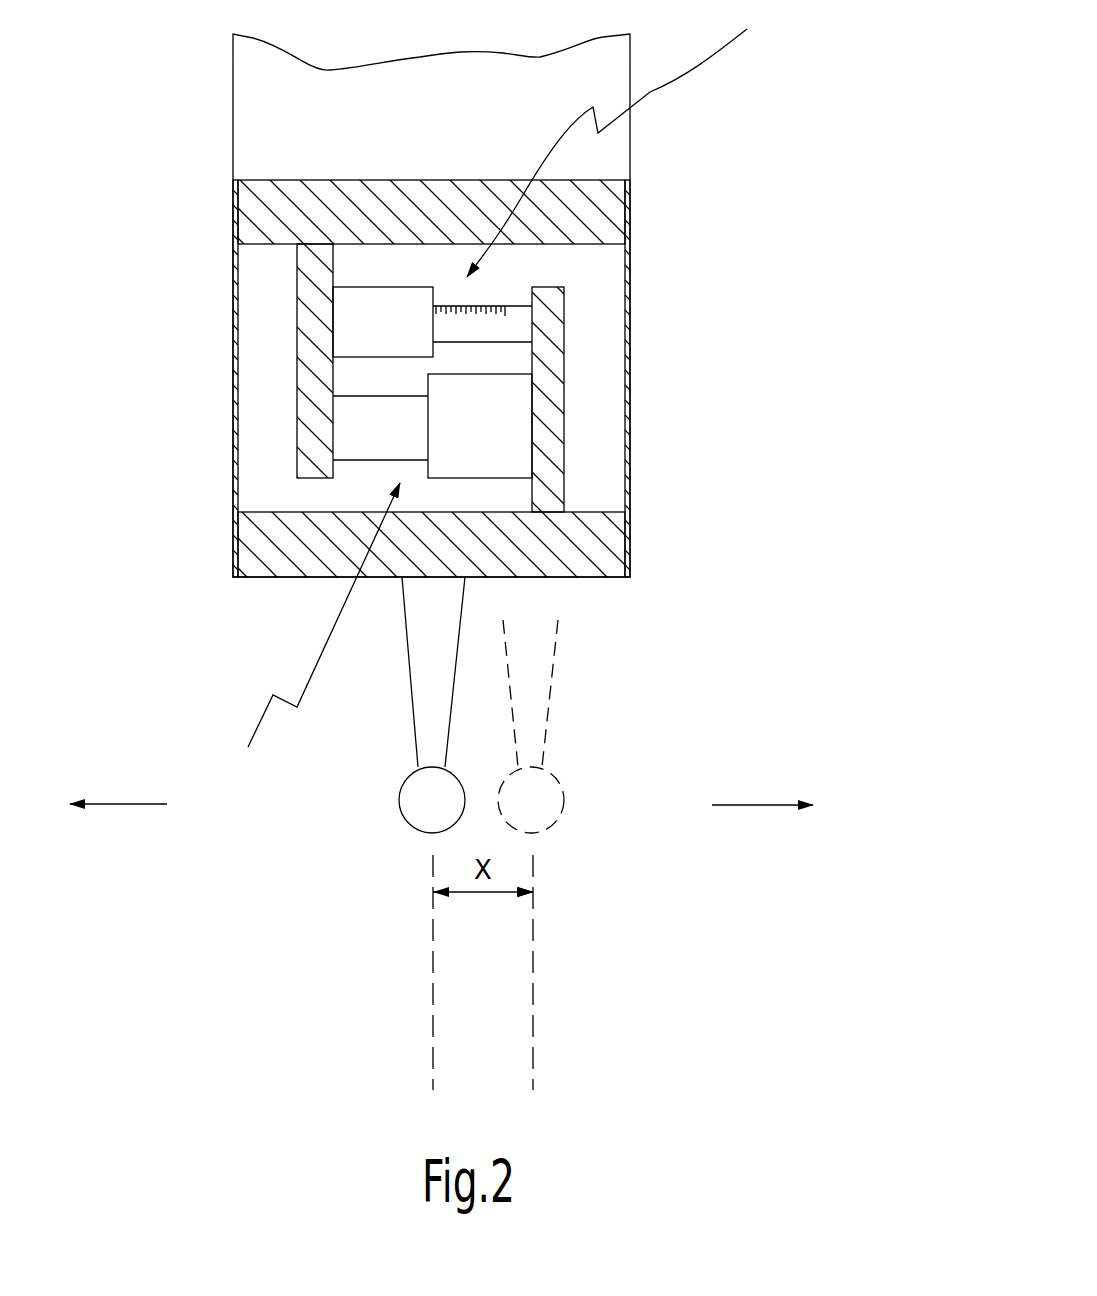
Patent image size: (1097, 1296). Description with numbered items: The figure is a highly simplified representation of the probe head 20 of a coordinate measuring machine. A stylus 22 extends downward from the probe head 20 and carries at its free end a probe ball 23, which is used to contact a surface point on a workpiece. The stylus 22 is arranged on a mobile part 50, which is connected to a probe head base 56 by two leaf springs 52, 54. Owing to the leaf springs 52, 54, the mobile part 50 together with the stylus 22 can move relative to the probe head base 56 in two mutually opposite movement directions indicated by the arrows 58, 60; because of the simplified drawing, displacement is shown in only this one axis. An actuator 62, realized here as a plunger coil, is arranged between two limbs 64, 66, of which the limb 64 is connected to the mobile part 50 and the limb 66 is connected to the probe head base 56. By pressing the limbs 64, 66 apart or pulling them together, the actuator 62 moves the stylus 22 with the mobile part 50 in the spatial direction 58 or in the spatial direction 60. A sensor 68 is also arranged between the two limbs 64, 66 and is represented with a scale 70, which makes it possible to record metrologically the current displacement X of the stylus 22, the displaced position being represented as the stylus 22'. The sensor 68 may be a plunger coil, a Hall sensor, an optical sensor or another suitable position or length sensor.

The probe head 20 is at (682, 312).
The stylus 22 is at (401, 681).
The displaced stylus 22' is at (590, 726).
The probe ball 23 is at (410, 818).
The mobile part 50 is at (295, 557).
The leaf spring 52 is at (233, 387).
The leaf spring 54 is at (630, 412).
The probe head base 56 is at (377, 210).
The movement direction 58 is at (770, 880).
The movement direction 60 is at (125, 804).
The actuator 62 is at (245, 760).
The limb 64 is at (553, 385).
The limb 66 is at (307, 437).
The sensor 68 is at (373, 317).
The scale 70 is at (490, 305).